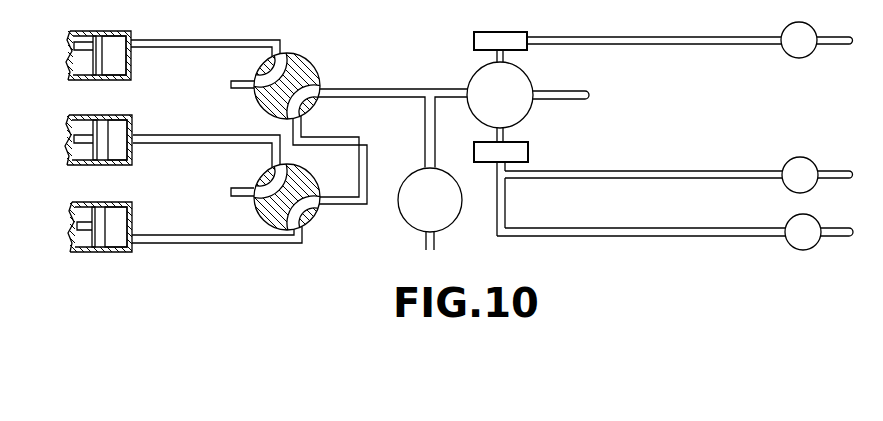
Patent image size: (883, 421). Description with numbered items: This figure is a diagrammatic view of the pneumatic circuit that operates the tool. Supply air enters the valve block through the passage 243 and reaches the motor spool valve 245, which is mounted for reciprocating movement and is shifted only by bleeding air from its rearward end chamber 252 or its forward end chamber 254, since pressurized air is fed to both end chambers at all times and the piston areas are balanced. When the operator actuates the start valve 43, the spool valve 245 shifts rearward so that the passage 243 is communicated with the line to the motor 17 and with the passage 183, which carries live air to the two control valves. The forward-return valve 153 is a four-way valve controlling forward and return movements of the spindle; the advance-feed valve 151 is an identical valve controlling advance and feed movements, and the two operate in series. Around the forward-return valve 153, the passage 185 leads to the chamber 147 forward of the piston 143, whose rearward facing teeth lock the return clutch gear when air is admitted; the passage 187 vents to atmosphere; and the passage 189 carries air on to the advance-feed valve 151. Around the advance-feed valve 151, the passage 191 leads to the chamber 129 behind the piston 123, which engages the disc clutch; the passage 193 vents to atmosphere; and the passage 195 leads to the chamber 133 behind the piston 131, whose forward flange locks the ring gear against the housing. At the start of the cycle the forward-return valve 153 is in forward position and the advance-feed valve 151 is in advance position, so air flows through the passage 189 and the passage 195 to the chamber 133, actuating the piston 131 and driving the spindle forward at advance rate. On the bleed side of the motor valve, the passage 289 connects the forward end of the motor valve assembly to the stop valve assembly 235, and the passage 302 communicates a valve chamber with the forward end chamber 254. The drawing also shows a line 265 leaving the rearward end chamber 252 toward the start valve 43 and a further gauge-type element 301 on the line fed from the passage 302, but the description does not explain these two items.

The motor 17 is at (455, 220).
The start valve 43 is at (812, 27).
The piston 123 is at (96, 122).
The chamber 129 is at (112, 125).
The piston 131 is at (94, 249).
The chamber 133 is at (116, 249).
The piston 143 is at (95, 38).
The chamber 147 is at (116, 42).
The advance-feed valve 151 is at (309, 172).
The forward-return valve 153 is at (311, 63).
The passage 183 is at (373, 88).
The passage 185 is at (191, 41).
The passage 187 is at (246, 89).
The passage 189 is at (368, 146).
The passage 191 is at (196, 136).
The passage 193 is at (246, 197).
The passage 195 is at (243, 244).
The stop valve assembly 235 is at (811, 160).
The passage 243 is at (583, 100).
The spool valve 245 is at (527, 77).
The rearward end chamber 252 is at (481, 32).
The forward end chamber 254 is at (522, 142).
The conduit 265 is at (600, 37).
The passage 289 is at (507, 166).
The valve 301 is at (815, 246).
The passage 302 is at (506, 200).